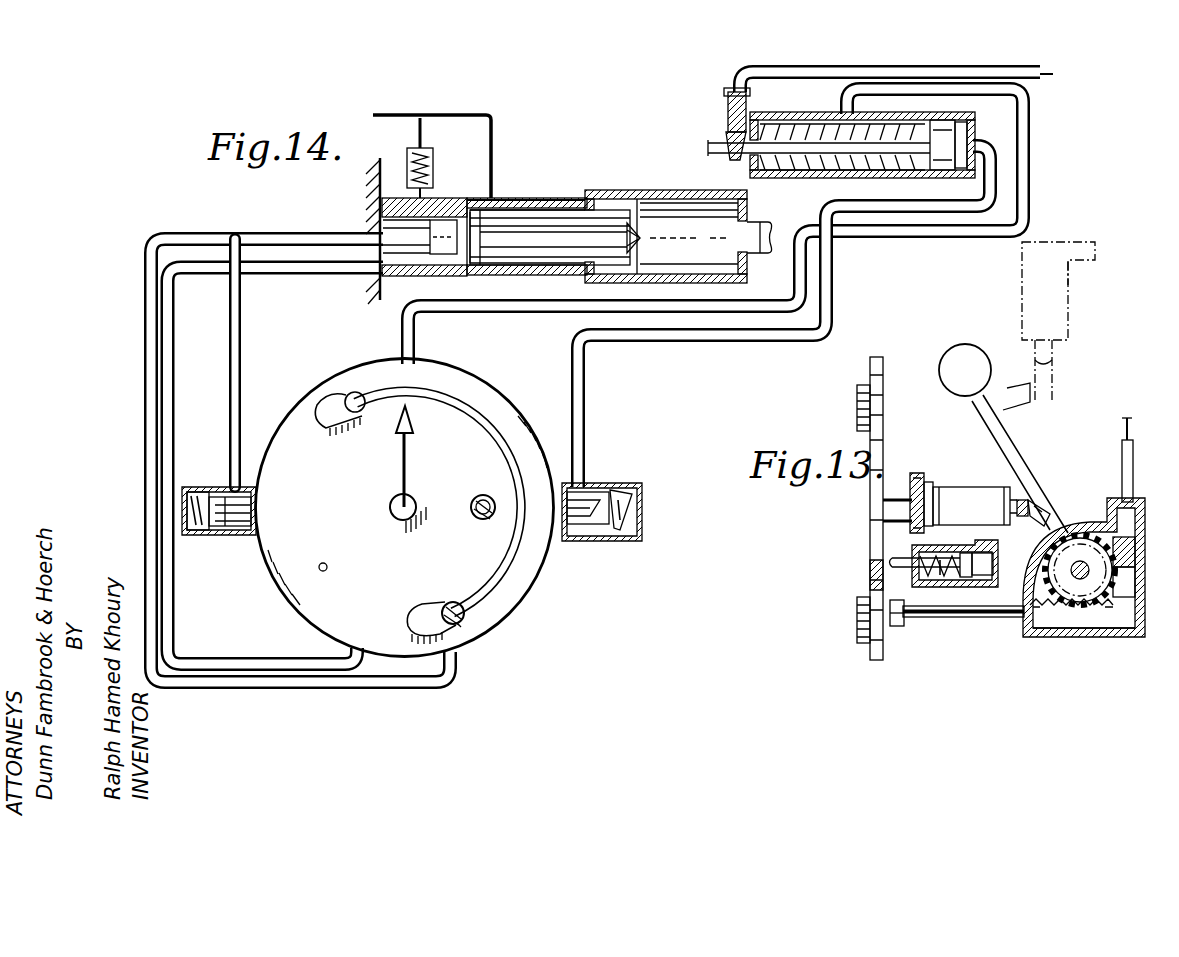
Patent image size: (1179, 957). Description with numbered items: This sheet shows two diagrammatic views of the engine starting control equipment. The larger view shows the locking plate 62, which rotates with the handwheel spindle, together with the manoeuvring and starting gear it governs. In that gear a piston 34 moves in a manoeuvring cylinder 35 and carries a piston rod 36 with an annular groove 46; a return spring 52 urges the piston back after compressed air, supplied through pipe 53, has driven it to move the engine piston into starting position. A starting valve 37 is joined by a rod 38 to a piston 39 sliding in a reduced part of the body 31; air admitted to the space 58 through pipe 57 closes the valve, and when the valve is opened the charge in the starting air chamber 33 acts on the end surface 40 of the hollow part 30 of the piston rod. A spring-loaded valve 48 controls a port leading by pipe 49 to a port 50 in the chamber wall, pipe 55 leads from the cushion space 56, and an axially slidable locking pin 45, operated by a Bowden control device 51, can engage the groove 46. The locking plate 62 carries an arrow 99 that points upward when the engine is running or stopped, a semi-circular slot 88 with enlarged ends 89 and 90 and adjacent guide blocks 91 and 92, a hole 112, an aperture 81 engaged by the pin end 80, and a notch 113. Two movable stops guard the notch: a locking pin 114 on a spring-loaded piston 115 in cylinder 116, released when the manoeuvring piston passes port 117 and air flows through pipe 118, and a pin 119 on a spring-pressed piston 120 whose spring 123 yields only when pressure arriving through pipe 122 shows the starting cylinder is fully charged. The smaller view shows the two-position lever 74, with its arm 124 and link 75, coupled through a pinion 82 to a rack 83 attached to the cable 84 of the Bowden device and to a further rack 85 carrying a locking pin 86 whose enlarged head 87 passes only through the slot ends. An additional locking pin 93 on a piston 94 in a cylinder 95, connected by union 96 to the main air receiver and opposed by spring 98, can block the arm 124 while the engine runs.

In FIG. 14, the hollow part of piston rod 30 is at (670, 196).
In FIG. 14, the body 31 is at (565, 278).
In FIG. 14, the starting air chamber 33 is at (552, 210).
In FIG. 14, the piston 34 is at (960, 138).
In FIG. 14, the cylinder 35 is at (868, 180).
In FIG. 14, the piston rod 36 is at (790, 178).
In FIG. 14, the valve 37 is at (641, 244).
In FIG. 14, the rod 38 is at (510, 262).
In FIG. 14, the piston 39 is at (432, 240).
In FIG. 14, the end surface 40 is at (740, 262).
In FIG. 14, the locking pin 45 is at (727, 128).
In FIG. 14, the annular groove 46 is at (730, 160).
In FIG. 14, the spring-loaded valve 48 is at (434, 180).
In FIG. 14, the pipe 49 is at (493, 136).
In FIG. 14, the port 50 is at (492, 198).
In FIG. 14, the Bowden control device 51 is at (735, 82).
In FIG. 13, the Bowden control device 51 is at (1120, 458).
In FIG. 14, the spring 52 is at (797, 125).
In FIG. 14, the pipe 53 is at (462, 312).
In FIG. 14, the pipe 55 is at (173, 383).
In FIG. 14, the cushion space 56 is at (689, 251).
In FIG. 14, the pipe 57 is at (157, 322).
In FIG. 14, the space 58 is at (378, 230).
In FIG. 14, the locking plate 62 is at (528, 586).
In FIG. 13, the locking plate 62 is at (884, 432).
In FIG. 13, the two-position lever 74 is at (1030, 456).
In FIG. 13, the link 75 is at (1036, 502).
In FIG. 14, the end of locking pin 80 is at (483, 495).
In FIG. 13, the end of locking pin 80 is at (868, 503).
In FIG. 14, the aperture 81 is at (480, 518).
In FIG. 13, the pinion 82 is at (1086, 600).
In FIG. 13, the rack 83 is at (1124, 598).
In FIG. 13, the cable 84 is at (1112, 518).
In FIG. 13, the rack 85 is at (1040, 616).
In FIG. 13, the locking pin 86 is at (972, 618).
In FIG. 14, the enlarged head 87 is at (453, 602).
In FIG. 13, the enlarged head 87 is at (898, 628).
In FIG. 14, the semi-circular slot 88 is at (496, 425).
In FIG. 14, the enlarged end of slot 89 is at (356, 392).
In FIG. 14, the enlarged end of slot 90 is at (461, 621).
In FIG. 14, the guide block 91 is at (328, 422).
In FIG. 13, the guide block 91 is at (856, 392).
In FIG. 14, the guide block 92 is at (422, 604).
In FIG. 13, the guide block 92 is at (856, 620).
In FIG. 13, the locking pin 93 is at (1053, 362).
In FIG. 13, the piston 94 is at (996, 572).
In FIG. 13, the cylinder 95 is at (1060, 322).
In FIG. 13, the union 96 is at (1085, 262).
In FIG. 13, the spring 98 is at (940, 555).
In FIG. 14, the arrow 99 is at (402, 470).
In FIG. 14, the hole 112 is at (328, 567).
In FIG. 13, the hole 112 is at (870, 566).
In FIG. 14, the notch 113 is at (413, 358).
In FIG. 14, the locking pin 114 is at (590, 500).
In FIG. 14, the spring-loaded piston 115 is at (640, 495).
In FIG. 14, the cylinder 116 is at (610, 538).
In FIG. 14, the port 117 is at (853, 110).
In FIG. 14, the pipe 118 is at (1024, 203).
In FIG. 14, the pin 119 is at (238, 530).
In FIG. 14, the spring-pressed piston 120 is at (200, 488).
In FIG. 14, the pipe 122 is at (241, 383).
In FIG. 14, the spring 123 is at (196, 528).
In FIG. 13, the arm 124 is at (1012, 415).